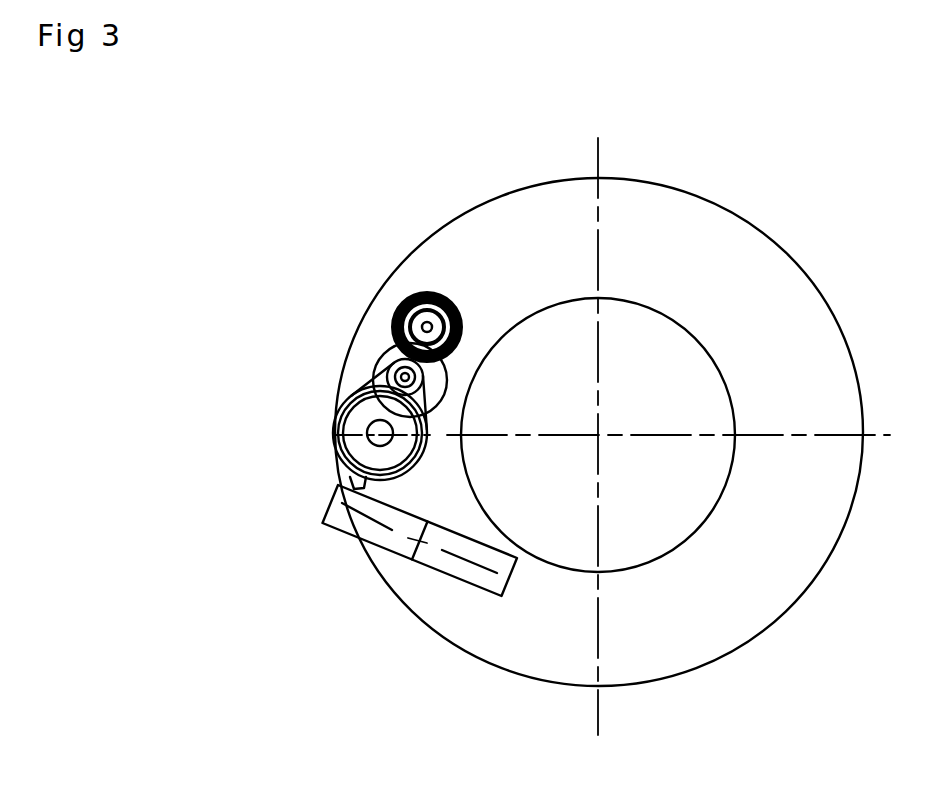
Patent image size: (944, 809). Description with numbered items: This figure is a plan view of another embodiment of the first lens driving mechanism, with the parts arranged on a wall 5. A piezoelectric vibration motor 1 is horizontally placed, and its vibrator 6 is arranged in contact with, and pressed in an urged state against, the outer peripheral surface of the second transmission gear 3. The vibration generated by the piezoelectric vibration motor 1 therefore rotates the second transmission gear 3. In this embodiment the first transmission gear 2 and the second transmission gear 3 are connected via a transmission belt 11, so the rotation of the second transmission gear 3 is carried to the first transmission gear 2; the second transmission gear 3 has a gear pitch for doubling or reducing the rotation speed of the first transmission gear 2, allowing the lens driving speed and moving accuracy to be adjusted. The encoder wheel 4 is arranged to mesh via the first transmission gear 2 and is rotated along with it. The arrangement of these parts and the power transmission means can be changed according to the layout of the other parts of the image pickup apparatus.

The piezoelectric vibration motor 1 is at (325, 520).
The first transmission gear 2 is at (382, 358).
The second transmission gear 3 is at (333, 437).
The encoder wheel 4 is at (430, 291).
The wall 5 is at (515, 674).
The vibrator 6 is at (348, 481).
The transmission belt 11 is at (388, 382).